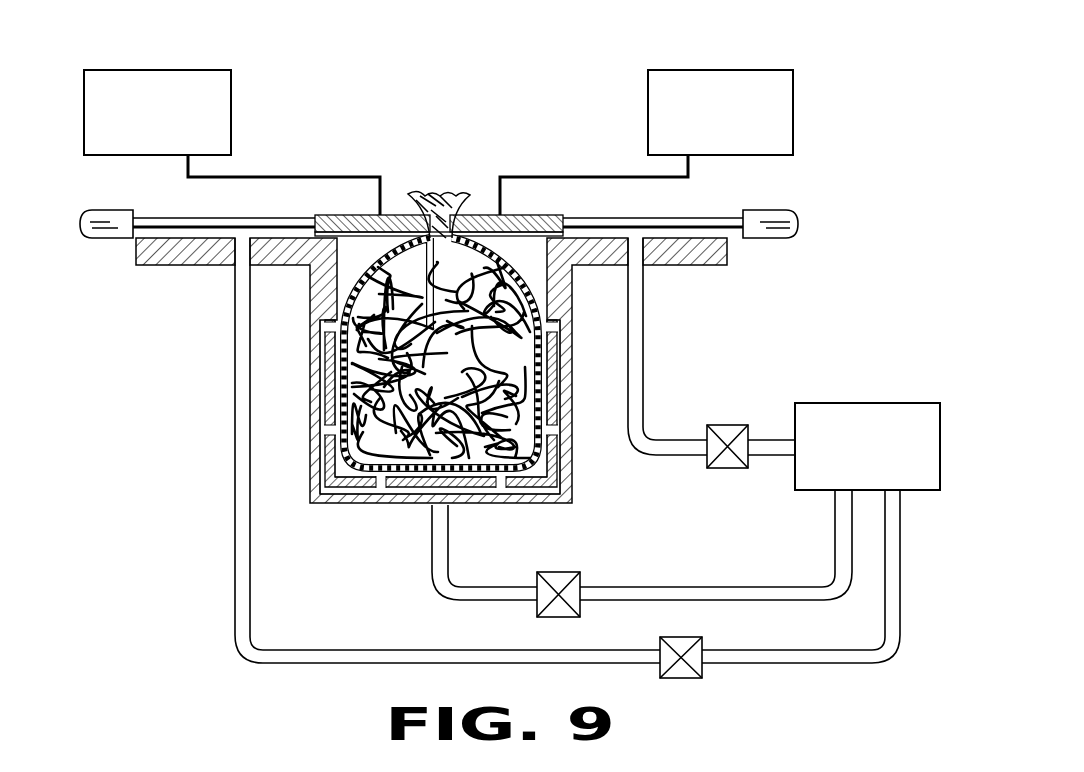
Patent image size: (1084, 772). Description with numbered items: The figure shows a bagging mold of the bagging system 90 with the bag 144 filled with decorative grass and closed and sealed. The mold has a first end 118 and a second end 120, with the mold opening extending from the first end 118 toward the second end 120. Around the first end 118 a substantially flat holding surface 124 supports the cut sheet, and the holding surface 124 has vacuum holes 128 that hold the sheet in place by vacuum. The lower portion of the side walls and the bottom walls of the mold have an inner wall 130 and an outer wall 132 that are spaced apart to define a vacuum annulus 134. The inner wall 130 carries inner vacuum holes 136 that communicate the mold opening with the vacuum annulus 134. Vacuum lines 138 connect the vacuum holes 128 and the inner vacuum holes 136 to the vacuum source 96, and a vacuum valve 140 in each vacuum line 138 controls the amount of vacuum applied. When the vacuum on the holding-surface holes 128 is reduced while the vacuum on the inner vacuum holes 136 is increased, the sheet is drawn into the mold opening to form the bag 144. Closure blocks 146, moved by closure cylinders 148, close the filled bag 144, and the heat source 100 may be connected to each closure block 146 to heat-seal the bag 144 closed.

The bagging system 90 is at (627, 40).
The vacuum source 96 is at (870, 403).
The heat source 100 is at (193, 70).
The first end 118 is at (312, 234).
The second end 120 is at (338, 505).
The holding surface 124 is at (178, 238).
The vacuum holes 128 is at (241, 250).
The inner wall 130 is at (322, 357).
The outer wall 132 is at (327, 420).
The vacuum annulus 134 is at (318, 388).
The inner vacuum holes 136 is at (330, 327).
The vacuum lines 138 is at (634, 305).
The vacuum valve 140 is at (722, 470).
The bag 144 is at (487, 250).
The closure blocks 146 is at (365, 215).
The closure cylinders 148 is at (115, 240).